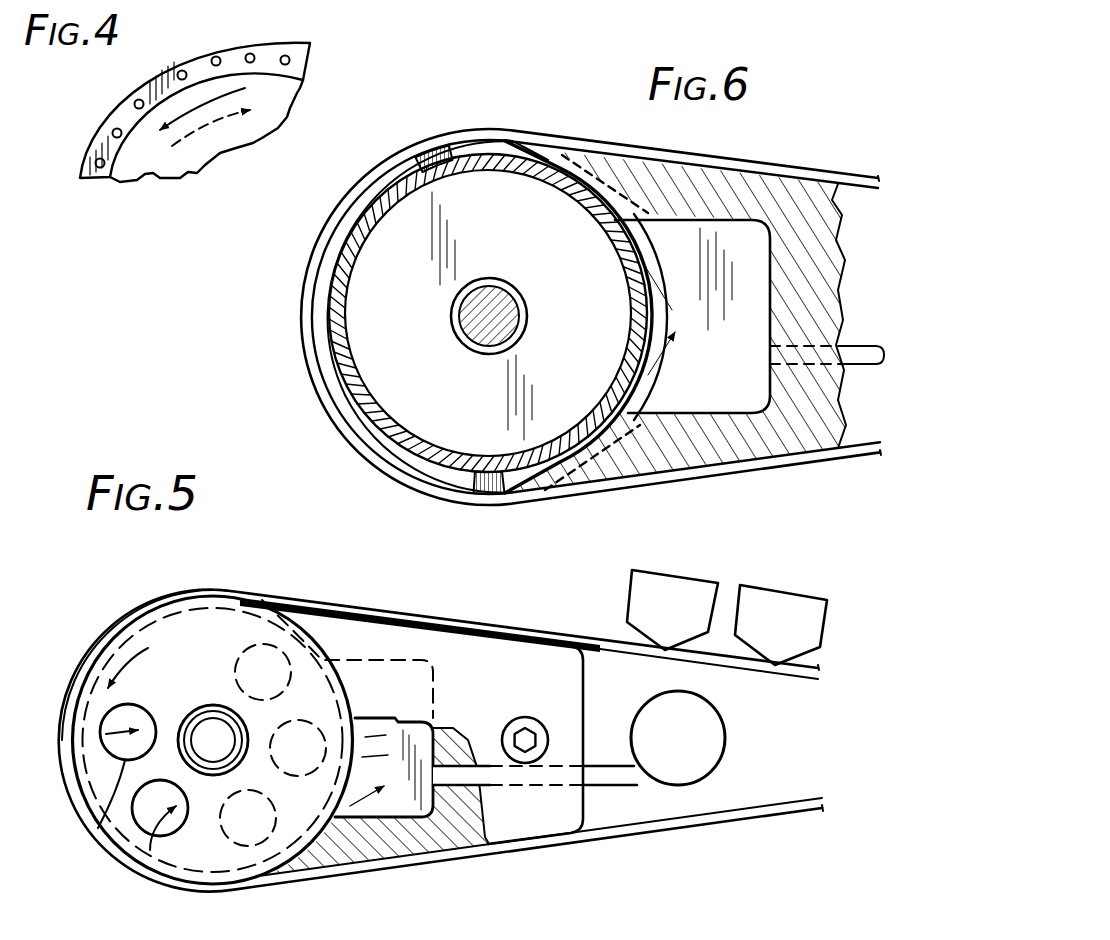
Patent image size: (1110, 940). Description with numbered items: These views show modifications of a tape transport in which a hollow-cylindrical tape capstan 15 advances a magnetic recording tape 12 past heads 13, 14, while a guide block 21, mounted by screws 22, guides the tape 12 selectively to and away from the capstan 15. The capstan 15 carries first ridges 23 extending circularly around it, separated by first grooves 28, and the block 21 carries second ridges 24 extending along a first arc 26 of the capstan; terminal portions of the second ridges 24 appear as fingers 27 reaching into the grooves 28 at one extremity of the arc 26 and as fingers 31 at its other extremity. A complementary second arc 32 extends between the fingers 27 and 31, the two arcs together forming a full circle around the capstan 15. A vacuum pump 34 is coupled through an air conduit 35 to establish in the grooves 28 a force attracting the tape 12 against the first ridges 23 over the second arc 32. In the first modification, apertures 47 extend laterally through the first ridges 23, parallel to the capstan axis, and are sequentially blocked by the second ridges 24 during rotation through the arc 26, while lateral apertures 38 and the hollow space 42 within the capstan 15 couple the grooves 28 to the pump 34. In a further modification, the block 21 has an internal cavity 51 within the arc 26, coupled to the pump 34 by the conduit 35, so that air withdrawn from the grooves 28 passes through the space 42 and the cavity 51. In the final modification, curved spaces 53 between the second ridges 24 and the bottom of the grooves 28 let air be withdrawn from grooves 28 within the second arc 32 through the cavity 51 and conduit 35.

In FIG. 6, the tape 12 is at (727, 160).
In FIG. 5, the tape 12 is at (668, 830).
In FIG. 5, the head 13 is at (673, 623).
In FIG. 5, the head 14 is at (785, 645).
In FIG. 4, the tape capstan 15 is at (143, 178).
In FIG. 6, the tape capstan 15 is at (328, 315).
In FIG. 5, the tape capstan 15 is at (178, 640).
In FIG. 6, the guide block 21 is at (808, 227).
In FIG. 5, the guide block 21 is at (584, 689).
In FIG. 5, the screws 22 is at (520, 718).
In FIG. 4, the first ridges 23 is at (172, 70).
In FIG. 6, the first ridges 23 is at (358, 200).
In FIG. 6, the second ridges 24 is at (572, 146).
In FIG. 6, the first arc 26 is at (669, 290).
In FIG. 5, the first arc 26 is at (310, 660).
In FIG. 6, the fingers 27 is at (520, 140).
In FIG. 6, the first grooves 28 is at (437, 146).
In FIG. 6, the fingers 31 is at (508, 492).
In FIG. 6, the second arc 32 is at (344, 398).
In FIG. 5, the second arc 32 is at (110, 650).
In FIG. 5, the vacuum pump 34 is at (726, 728).
In FIG. 6, the air conduit 35 is at (848, 347).
In FIG. 5, the air conduit 35 is at (607, 766).
In FIG. 5, the lateral apertures 38 is at (132, 820).
In FIG. 5, the hollow space 42 is at (150, 850).
In FIG. 4, the apertures 47 is at (250, 53).
In FIG. 6, the internal cavity 51 is at (728, 338).
In FIG. 5, the internal cavity 51 is at (413, 806).
In FIG. 6, the curved spaces 53 is at (578, 198).